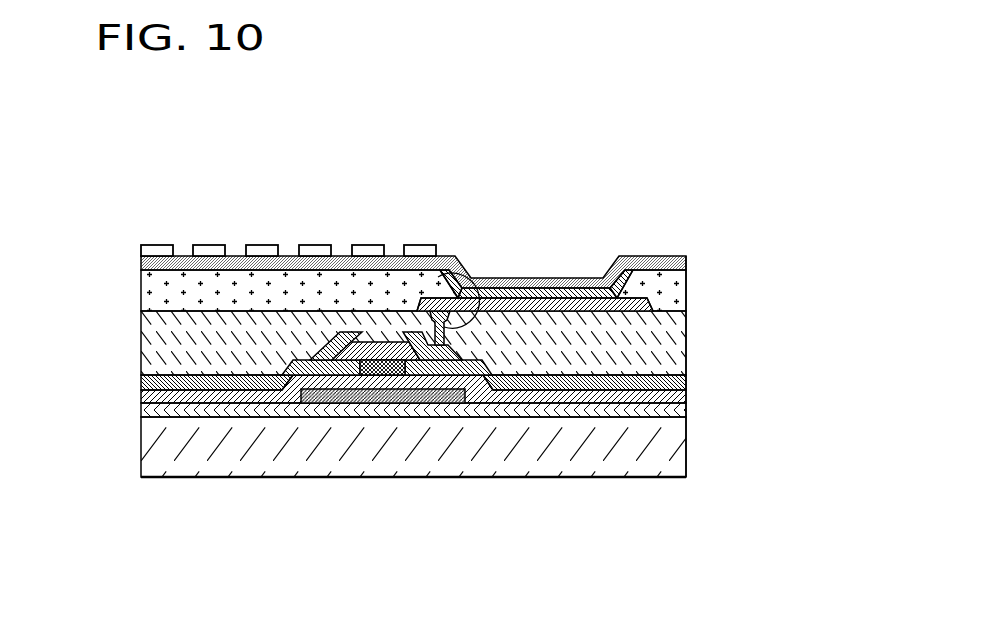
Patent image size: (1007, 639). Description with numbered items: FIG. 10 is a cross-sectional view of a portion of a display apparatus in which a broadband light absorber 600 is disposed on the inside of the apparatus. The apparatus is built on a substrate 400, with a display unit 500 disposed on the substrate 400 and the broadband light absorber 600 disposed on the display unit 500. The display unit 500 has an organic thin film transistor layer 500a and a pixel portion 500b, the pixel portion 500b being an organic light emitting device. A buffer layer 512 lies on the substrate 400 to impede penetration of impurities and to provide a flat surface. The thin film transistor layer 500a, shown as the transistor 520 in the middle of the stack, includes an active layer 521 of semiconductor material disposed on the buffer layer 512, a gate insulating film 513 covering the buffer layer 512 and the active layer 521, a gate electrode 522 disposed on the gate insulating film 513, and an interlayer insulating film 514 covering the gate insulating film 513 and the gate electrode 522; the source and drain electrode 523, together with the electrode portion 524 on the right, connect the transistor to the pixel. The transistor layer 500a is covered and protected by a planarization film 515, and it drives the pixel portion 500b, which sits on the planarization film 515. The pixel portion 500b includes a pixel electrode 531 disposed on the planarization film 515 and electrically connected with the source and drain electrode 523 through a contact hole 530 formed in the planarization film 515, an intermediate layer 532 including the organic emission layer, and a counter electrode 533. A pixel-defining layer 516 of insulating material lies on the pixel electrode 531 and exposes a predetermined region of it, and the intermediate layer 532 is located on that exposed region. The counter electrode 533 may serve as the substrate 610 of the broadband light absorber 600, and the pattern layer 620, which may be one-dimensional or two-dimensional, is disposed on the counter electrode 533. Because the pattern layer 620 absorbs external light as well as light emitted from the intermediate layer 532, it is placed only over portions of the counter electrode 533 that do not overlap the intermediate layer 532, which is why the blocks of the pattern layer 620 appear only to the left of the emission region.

The substrate 400 is at (688, 448).
The display unit 500 is at (505, 386).
The TFT layer 500a is at (479, 439).
The pixel portion 500b is at (479, 275).
The buffer layer 512 is at (688, 412).
The gate insulating film 513 is at (688, 397).
The interlayer insulating film 514 is at (688, 382).
The planarization film 515 is at (688, 343).
The pixel-defining layer 516 is at (688, 290).
The thin film transistor 520 is at (387, 449).
The active layer 521 is at (323, 391).
The gate electrode 522 is at (383, 368).
The source and drain electrode 523 is at (330, 382).
The drain electrode 524 is at (457, 348).
The contact hole 530 is at (482, 292).
The pixel electrode 531 is at (535, 303).
The intermediate layer 532 is at (583, 293).
The counter electrode 533 is at (688, 264).
The broadband light absorber 600 is at (361, 261).
The substrate of the broadband light absorber 610 is at (147, 264).
The pattern layer 620 is at (152, 252).